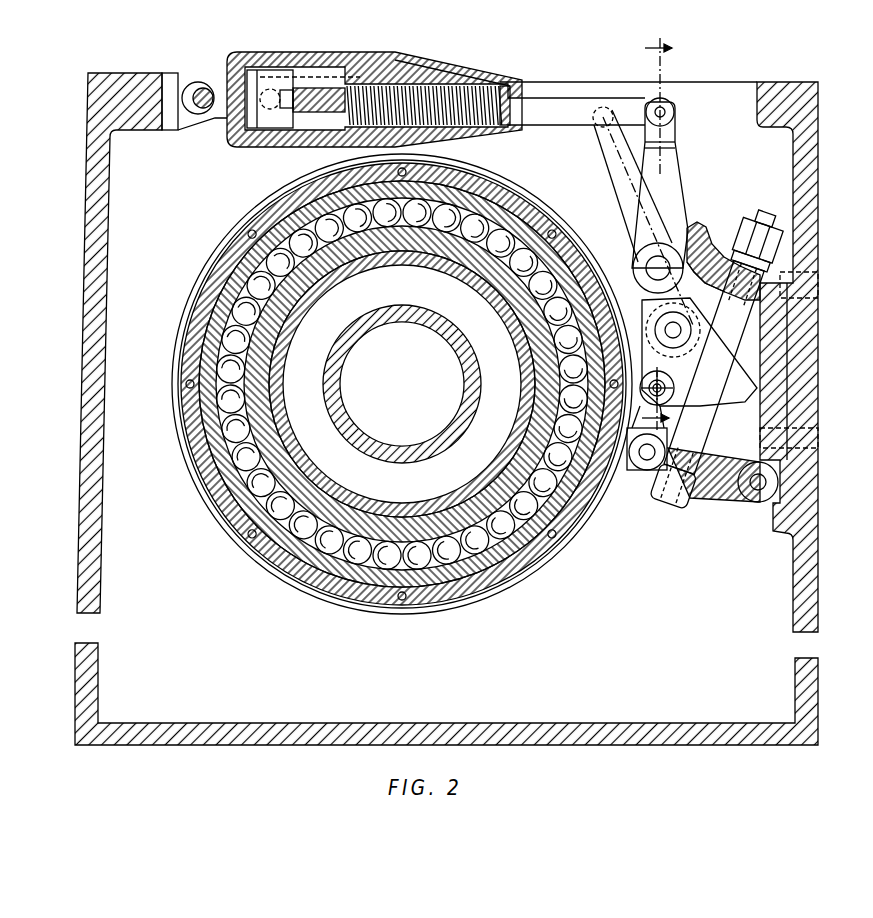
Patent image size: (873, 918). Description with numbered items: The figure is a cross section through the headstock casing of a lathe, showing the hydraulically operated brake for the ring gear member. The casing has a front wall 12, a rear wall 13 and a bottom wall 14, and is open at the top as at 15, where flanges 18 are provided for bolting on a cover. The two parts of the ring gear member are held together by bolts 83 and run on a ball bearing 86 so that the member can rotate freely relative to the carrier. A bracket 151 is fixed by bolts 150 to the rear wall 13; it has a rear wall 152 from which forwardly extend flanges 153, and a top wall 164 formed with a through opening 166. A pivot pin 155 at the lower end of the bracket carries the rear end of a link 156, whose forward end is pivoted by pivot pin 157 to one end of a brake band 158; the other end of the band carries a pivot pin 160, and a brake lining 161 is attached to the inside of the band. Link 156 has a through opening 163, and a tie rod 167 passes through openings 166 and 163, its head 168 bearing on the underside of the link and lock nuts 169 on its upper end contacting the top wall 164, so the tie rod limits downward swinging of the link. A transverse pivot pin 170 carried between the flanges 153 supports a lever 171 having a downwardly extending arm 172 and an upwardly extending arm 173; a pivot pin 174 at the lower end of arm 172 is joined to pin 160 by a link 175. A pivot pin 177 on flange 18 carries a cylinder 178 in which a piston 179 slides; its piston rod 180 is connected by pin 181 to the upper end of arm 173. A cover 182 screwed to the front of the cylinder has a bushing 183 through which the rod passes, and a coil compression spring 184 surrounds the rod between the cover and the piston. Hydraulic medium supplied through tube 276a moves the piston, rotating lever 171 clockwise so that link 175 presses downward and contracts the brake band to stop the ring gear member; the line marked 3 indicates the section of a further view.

The front wall 12 is at (86, 490).
The rear wall 13 is at (802, 580).
The bottom wall 14 is at (192, 738).
The open top 15 is at (722, 100).
The flange 18 is at (136, 131).
The bolt 83 is at (250, 536).
The ball bearing 86 is at (240, 512).
The bolt 150 is at (800, 294).
The bracket 151 is at (693, 224).
The rear wall 152 is at (768, 375).
The flange 153 is at (747, 360).
The pivot pin 155 is at (753, 503).
The link 156 is at (723, 480).
The pivot pin 157 is at (645, 472).
The brake band 158 is at (493, 603).
The pivot pin 160 is at (653, 388).
The brake lining 161 is at (422, 604).
The through opening 163 is at (702, 456).
The top wall 164 is at (750, 240).
The through opening 166 is at (772, 258).
The tie rod 167 is at (692, 331).
The head 168 is at (675, 503).
The lock nut 169 is at (770, 232).
The transverse pivot pin 170 is at (655, 265).
The lever 171 is at (686, 150).
The downwardly extending arm 172 is at (706, 250).
The upwardly extending arm 173 is at (652, 150).
The pivot pin 174 is at (636, 272).
The link 175 is at (676, 362).
The pivot pin 177 is at (196, 88).
The cylinder 178 is at (246, 50).
The piston 179 is at (334, 68).
The piston rod 180 is at (540, 107).
The pin 181 is at (668, 108).
The cover 182 is at (440, 70).
The bushing 183 is at (514, 86).
The coil compression spring 184 is at (400, 84).
The tube 276a is at (243, 150).
The section line 3- 3 is at (666, 235).